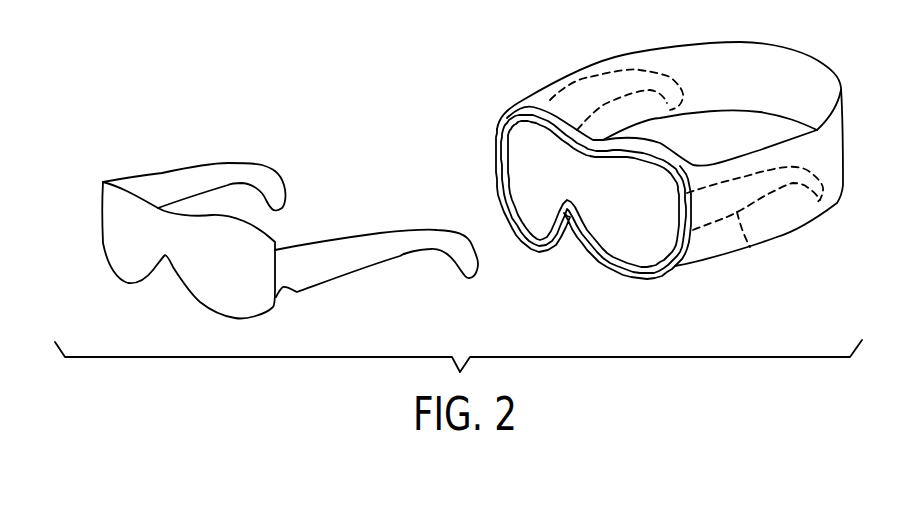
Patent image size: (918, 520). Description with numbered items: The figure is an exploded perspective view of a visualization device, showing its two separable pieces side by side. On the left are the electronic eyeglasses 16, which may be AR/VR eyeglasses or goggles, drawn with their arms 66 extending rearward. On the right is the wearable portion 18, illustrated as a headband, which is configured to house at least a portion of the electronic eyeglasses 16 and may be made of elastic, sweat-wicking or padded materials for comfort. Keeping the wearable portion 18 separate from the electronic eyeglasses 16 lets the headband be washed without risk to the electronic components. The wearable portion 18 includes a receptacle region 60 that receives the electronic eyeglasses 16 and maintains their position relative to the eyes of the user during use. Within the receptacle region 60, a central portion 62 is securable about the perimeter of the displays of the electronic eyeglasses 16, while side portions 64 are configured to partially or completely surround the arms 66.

The electronic eyeglasses 16 is at (167, 175).
The arms 66 is at (380, 232).
The wearable portion 18 is at (670, 47).
The receptacle region 60 is at (667, 273).
The central portion 62 is at (593, 227).
The side portions 64 is at (753, 247).